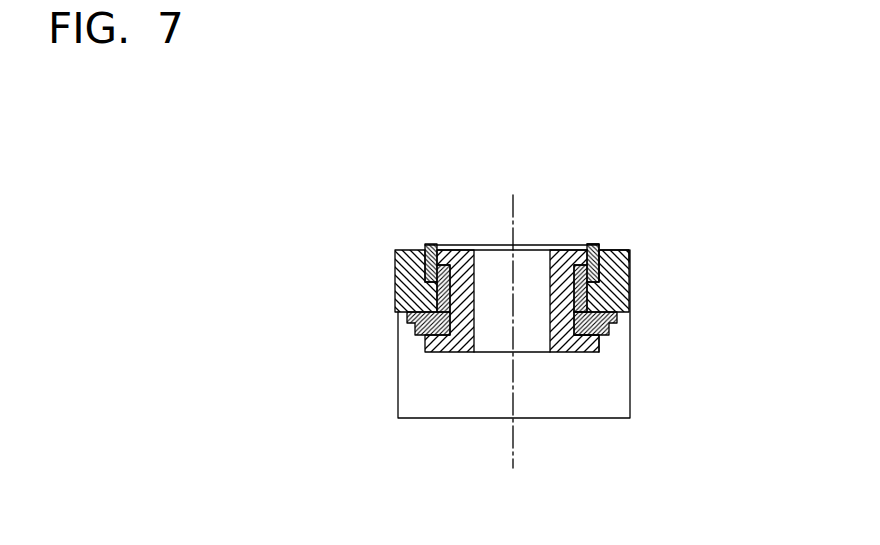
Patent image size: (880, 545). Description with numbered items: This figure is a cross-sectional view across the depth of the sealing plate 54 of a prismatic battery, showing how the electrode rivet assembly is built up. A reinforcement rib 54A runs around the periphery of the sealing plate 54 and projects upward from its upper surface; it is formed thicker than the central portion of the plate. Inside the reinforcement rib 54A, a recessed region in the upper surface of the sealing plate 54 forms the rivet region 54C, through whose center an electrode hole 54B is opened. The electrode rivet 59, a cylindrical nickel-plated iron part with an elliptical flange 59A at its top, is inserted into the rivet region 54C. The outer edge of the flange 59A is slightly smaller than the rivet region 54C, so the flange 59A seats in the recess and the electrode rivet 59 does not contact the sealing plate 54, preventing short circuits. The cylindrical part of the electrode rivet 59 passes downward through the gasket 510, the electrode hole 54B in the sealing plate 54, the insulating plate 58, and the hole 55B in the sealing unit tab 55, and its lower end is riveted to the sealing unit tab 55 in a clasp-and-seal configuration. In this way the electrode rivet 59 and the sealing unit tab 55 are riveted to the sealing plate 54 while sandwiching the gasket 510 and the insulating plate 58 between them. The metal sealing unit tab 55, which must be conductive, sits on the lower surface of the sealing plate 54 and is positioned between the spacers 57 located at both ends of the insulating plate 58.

The sealing plate 54 is at (632, 267).
The reinforcement rib 54A is at (622, 242).
The electrode hole 54B is at (548, 320).
The rivet region 54C is at (580, 268).
The sealing unit tab 55 is at (624, 335).
The hole 55B is at (566, 336).
The spacers 57 is at (612, 404).
The insulating plate 58 is at (620, 317).
The electrode rivet 59 is at (548, 268).
The flange 59A is at (553, 244).
The gasket 510 is at (596, 244).